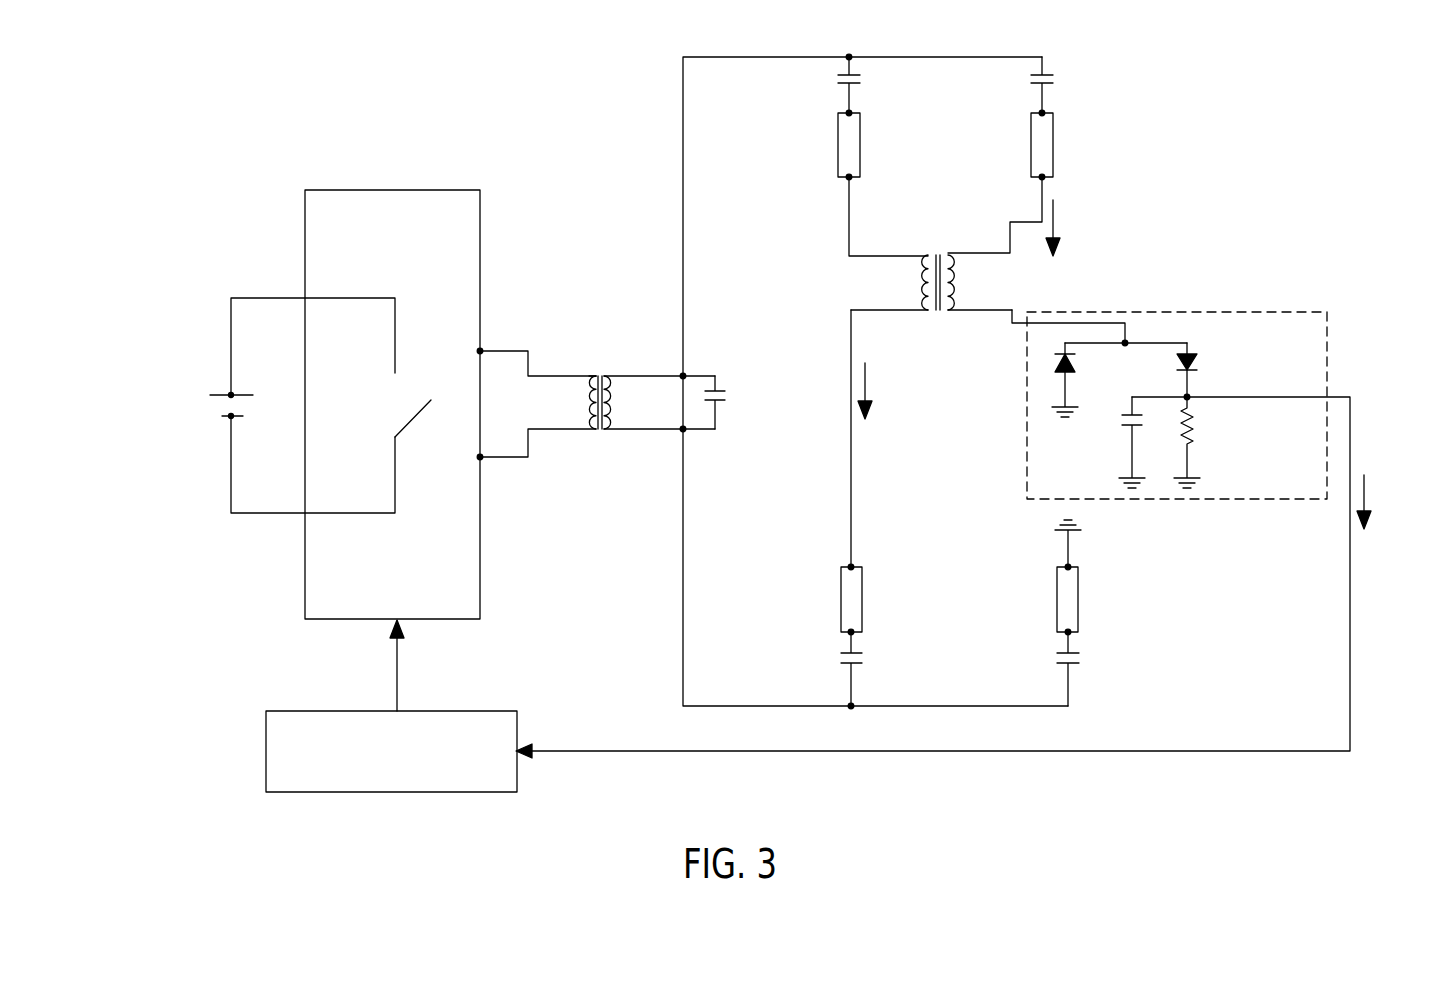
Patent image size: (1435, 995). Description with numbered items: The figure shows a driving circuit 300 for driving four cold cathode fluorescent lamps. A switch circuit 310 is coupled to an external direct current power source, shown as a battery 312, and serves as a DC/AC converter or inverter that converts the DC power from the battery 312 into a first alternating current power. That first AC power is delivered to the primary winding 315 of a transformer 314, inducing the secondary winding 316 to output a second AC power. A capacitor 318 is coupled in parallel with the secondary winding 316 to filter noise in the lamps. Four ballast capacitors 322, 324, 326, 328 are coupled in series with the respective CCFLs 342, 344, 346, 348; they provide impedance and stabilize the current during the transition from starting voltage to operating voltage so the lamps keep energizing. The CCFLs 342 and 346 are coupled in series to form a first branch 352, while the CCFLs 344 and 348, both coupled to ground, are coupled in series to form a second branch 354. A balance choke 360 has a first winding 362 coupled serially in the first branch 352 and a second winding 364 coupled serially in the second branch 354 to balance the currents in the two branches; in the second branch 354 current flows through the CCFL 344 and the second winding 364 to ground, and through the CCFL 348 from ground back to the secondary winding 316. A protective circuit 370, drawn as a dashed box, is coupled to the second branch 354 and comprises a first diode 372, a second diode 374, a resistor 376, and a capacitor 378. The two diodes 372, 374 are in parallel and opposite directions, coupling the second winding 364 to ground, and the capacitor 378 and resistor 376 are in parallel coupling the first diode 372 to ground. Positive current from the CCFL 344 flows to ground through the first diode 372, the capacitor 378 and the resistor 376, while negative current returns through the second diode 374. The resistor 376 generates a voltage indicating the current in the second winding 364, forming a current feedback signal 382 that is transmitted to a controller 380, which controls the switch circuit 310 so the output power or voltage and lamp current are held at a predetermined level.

The driving circuit 300 is at (240, 126).
The switch circuit 310 is at (430, 620).
The battery 312 is at (229, 393).
The transformer 314 is at (595, 373).
The primary winding 315 is at (590, 433).
The secondary winding 316 is at (606, 432).
The capacitor 318 is at (722, 402).
The capacitor 322 is at (857, 86).
The capacitor 324 is at (1050, 86).
The capacitor 326 is at (860, 665).
The capacitor 328 is at (1076, 665).
The cold cathode fluorescent lamp 342 is at (857, 180).
The cold cathode fluorescent lamp 344 is at (1050, 180).
The cold cathode fluorescent lamp 346 is at (858, 567).
The cold cathode fluorescent lamp 348 is at (1074, 567).
The first branch 352 is at (866, 376).
The second branch 354 is at (1054, 212).
The balance choke 360 is at (932, 253).
The first winding 362 is at (928, 313).
The second winding 364 is at (948, 313).
The protective circuit 370 is at (1270, 310).
The first diode 372 is at (1192, 374).
The second diode 374 is at (1068, 374).
The resistor 376 is at (1190, 442).
The capacitor 378 is at (1128, 430).
The controller 380 is at (457, 710).
The current feedback signal 382 is at (1365, 488).